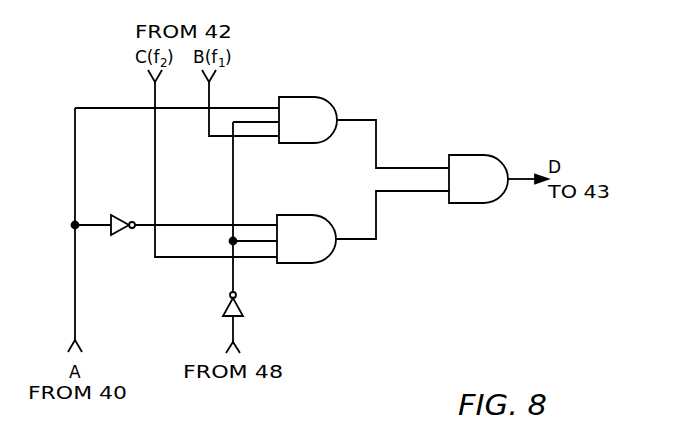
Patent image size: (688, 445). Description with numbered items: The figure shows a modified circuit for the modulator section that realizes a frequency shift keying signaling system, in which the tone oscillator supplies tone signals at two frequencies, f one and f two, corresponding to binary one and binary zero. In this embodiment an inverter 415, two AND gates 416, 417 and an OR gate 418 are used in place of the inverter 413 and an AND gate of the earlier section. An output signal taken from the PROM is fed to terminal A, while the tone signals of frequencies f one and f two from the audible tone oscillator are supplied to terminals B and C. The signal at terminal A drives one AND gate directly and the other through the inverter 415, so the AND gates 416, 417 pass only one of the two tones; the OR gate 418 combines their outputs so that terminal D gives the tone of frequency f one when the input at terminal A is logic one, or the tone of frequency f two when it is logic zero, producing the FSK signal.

The inverter 413 is at (246, 311).
The inverter 415 is at (117, 215).
The AND gate 416 is at (299, 97).
The AND gate 417 is at (312, 216).
The OR gate 418 is at (475, 203).